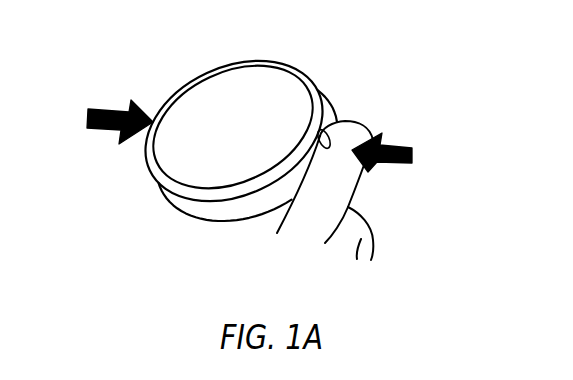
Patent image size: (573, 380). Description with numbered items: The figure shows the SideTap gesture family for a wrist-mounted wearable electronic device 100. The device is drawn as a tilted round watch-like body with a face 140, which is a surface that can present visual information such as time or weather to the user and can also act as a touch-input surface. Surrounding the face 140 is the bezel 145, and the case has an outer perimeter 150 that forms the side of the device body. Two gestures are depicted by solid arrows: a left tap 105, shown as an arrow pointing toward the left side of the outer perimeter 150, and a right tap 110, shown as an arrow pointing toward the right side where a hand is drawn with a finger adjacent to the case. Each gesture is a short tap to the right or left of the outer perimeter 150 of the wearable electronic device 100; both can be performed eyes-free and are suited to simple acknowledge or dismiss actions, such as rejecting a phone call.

The wearable electronic device 100 is at (200, 148).
The left tap 105 is at (80, 119).
The right tap 110 is at (418, 157).
The face 140 is at (223, 137).
The bezel 145 is at (156, 178).
The outer perimeter 150 is at (217, 216).